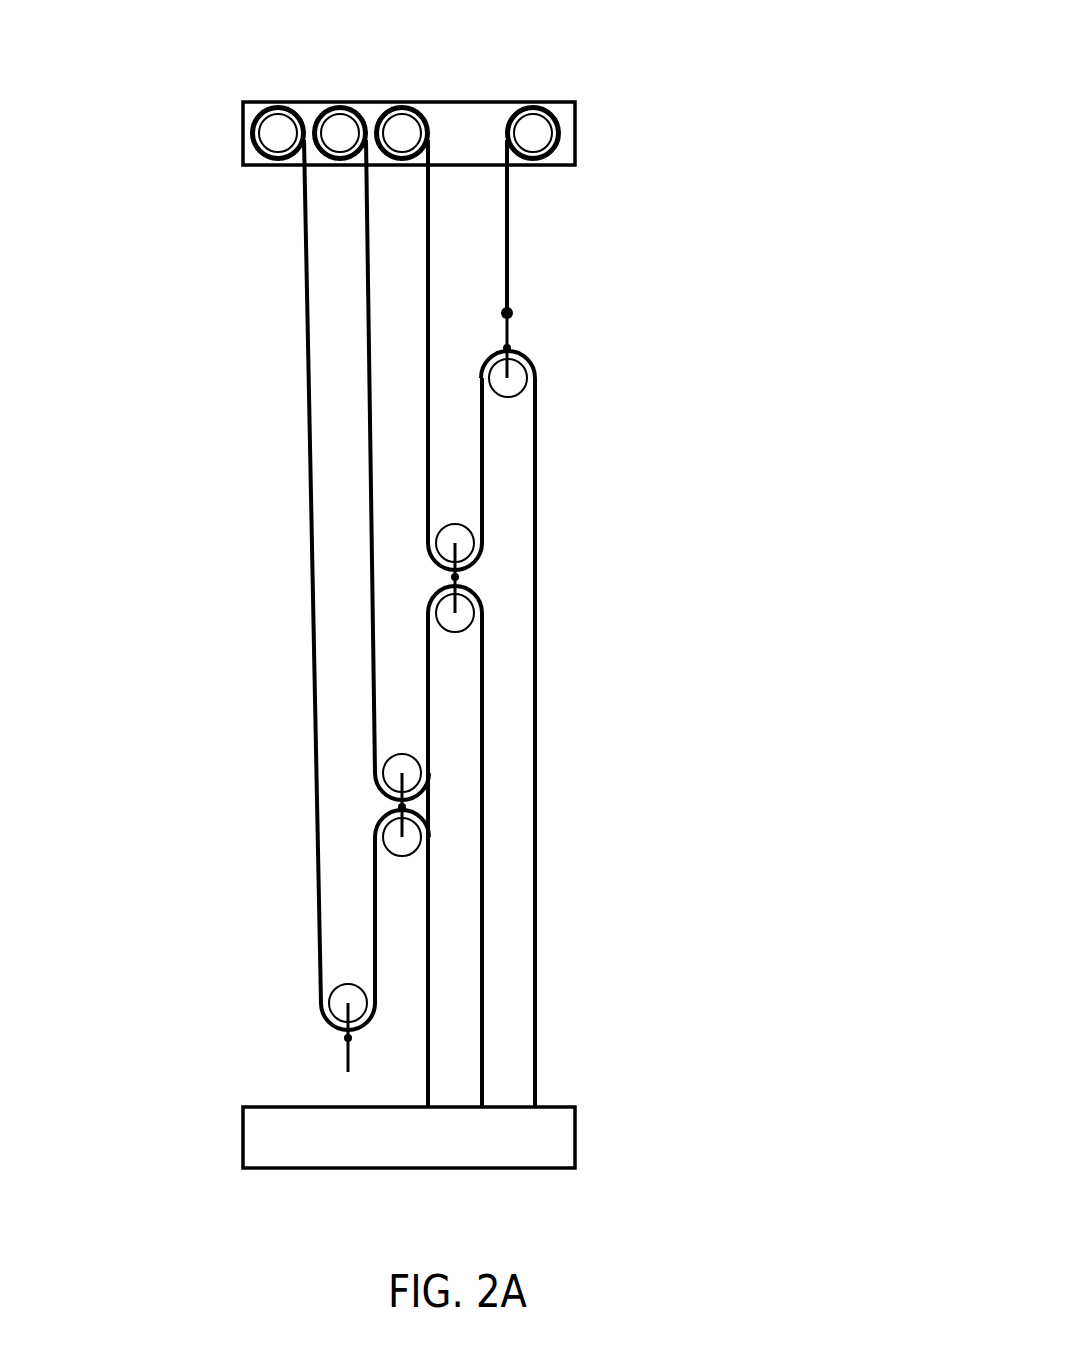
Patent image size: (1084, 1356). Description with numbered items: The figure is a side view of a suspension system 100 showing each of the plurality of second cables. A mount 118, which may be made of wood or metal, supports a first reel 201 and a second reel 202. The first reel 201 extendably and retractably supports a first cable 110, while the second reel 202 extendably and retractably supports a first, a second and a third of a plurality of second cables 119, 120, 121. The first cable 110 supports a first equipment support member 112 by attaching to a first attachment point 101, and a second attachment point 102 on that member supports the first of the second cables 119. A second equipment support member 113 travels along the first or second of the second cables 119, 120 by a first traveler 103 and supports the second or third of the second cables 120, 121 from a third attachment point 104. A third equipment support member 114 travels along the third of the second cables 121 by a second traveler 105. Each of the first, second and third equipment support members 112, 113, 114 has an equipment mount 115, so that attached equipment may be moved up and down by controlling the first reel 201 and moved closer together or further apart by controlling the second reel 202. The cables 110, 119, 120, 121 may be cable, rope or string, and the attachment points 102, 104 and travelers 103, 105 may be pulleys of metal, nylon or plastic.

The suspension system 100 is at (785, 778).
The first attachment point 101 is at (507, 313).
The second attachment point 102 is at (500, 387).
The first traveler 103 is at (453, 548).
The third attachment point 104 is at (455, 617).
The second traveler 105 is at (343, 1003).
The first cable 110 is at (507, 257).
The first equipment support member 112 is at (595, 363).
The second equipment support member 113 is at (428, 799).
The third equipment support member 114 is at (271, 1014).
The equipment mount 115 is at (507, 348).
The mount 118 is at (243, 133).
The first of the plurality of second cables 119 is at (428, 407).
The second of the plurality of second cables 120 is at (371, 443).
The third of the plurality of second cables 121 is at (311, 497).
The first reel 201 is at (538, 132).
The second reel 202 is at (402, 130).